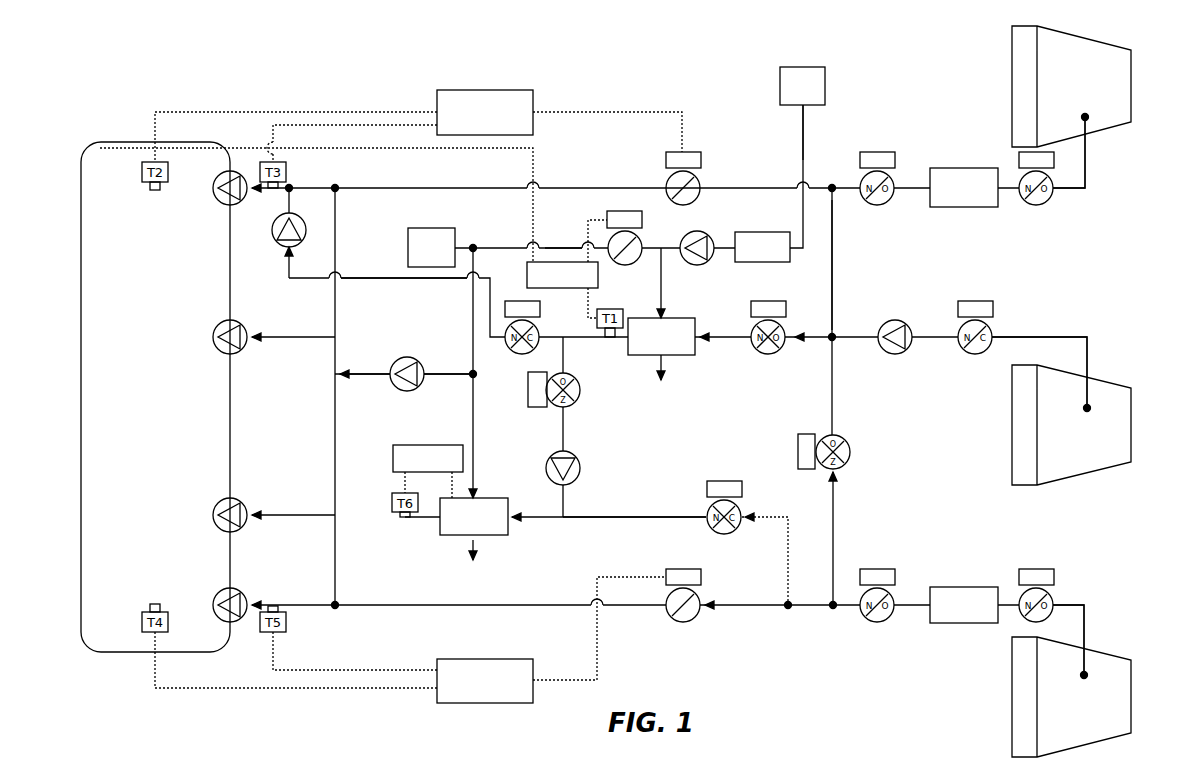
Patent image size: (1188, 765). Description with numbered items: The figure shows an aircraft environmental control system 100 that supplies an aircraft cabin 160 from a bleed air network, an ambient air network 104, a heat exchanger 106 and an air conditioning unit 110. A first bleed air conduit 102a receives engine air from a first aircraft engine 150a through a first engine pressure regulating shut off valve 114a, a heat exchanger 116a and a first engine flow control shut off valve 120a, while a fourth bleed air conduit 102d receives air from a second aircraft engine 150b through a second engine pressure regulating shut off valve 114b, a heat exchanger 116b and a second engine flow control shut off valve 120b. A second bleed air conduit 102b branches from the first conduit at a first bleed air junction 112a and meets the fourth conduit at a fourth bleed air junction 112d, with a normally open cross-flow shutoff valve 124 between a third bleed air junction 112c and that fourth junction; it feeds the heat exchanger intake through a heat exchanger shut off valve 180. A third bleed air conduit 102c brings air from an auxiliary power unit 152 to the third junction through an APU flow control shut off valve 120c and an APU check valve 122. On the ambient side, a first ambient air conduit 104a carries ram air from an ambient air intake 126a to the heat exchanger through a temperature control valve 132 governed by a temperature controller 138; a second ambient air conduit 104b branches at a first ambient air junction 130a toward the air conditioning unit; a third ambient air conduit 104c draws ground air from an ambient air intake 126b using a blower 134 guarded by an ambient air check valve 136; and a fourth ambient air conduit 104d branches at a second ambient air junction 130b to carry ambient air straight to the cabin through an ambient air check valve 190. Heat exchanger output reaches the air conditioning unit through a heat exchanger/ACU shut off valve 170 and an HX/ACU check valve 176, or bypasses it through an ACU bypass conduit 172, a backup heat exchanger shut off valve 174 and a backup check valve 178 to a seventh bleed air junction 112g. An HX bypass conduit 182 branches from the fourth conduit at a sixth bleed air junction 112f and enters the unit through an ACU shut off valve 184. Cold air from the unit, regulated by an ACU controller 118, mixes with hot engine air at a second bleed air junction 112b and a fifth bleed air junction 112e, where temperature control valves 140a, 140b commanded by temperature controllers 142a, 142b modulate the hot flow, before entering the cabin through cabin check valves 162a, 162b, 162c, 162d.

The environmental control system 100 is at (341, 72).
The first bleed air conduit 102a is at (1086, 178).
The second bleed air conduit 102b is at (832, 290).
The third bleed air conduit 102c is at (1050, 336).
The fourth bleed air conduit 102d is at (1085, 632).
The ambient air network 104 is at (462, 220).
The first ambient air conduit 104a is at (566, 246).
The second ambient air conduit 104b is at (470, 338).
The third ambient air conduit 104c is at (803, 120).
The fourth ambient air conduit 104d is at (348, 372).
The heat exchanger 106 is at (661, 336).
The air conditioning unit 110 is at (474, 516).
The first bleed air junction 112a is at (832, 186).
The second bleed air junction 112b is at (335, 190).
The third bleed air junction 112c is at (833, 338).
The fourth bleed air junction 112d is at (834, 608).
The fifth bleed air junction 112e is at (336, 604).
The sixth bleed air junction 112f is at (788, 607).
The seventh bleed air junction 112g is at (290, 188).
The first engine pressure regulating shut off valve 114a is at (1036, 205).
The second engine pressure regulating shut off valve 114b is at (1036, 568).
The heat exchanger 116a is at (964, 187).
The heat exchanger 116b is at (964, 605).
The ACU controller 118 is at (428, 458).
The first engine flow control shut off valve 120a is at (877, 205).
The second engine flow control shut off valve 120b is at (877, 567).
The APU flow control shut off valve 120c is at (975, 354).
The APU check valve 122 is at (895, 320).
The cross-flow shutoff valve 124 is at (850, 452).
The ambient air intake 126a is at (431, 247).
The ambient air intake 126b is at (802, 86).
The first ambient air junction 130a is at (473, 247).
The second ambient air junction 130b is at (473, 376).
The temperature control valve 132 is at (642, 222).
The blower 134 is at (762, 247).
The ambient air check valve 136 is at (698, 265).
The temperature controller 138 is at (562, 275).
The temperature control valve 140a is at (665, 158).
The temperature control valve 140b is at (683, 622).
The temperature controller 142a is at (485, 112).
The temperature controller 142b is at (485, 681).
The first aircraft engine 150a is at (1071, 86).
The second aircraft engine 150b is at (1071, 697).
The auxiliary power unit 152 is at (1071, 425).
The aircraft cabin 160 is at (155, 397).
The cabin check valve 162a is at (226, 203).
The cabin check valve 162b is at (241, 352).
The cabin check valve 162c is at (241, 501).
The cabin check valve 162d is at (222, 590).
The heat exchanger/ACU shut off valve 170 is at (581, 390).
The ACU bypass conduit 172 is at (455, 280).
The backup heat exchanger shut off valve 174 is at (520, 354).
The HX/ACU check valve 176 is at (581, 465).
The backup check valve 178 is at (283, 250).
The heat exchanger shut off valve 180 is at (768, 354).
The HX bypass conduit 182 is at (624, 519).
The ACU shut off valve 184 is at (726, 534).
The ambient air check valve 190 is at (405, 392).